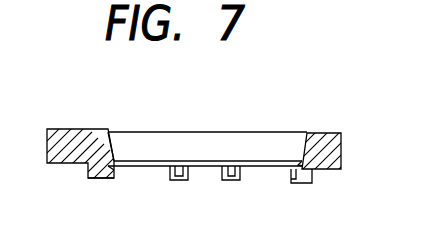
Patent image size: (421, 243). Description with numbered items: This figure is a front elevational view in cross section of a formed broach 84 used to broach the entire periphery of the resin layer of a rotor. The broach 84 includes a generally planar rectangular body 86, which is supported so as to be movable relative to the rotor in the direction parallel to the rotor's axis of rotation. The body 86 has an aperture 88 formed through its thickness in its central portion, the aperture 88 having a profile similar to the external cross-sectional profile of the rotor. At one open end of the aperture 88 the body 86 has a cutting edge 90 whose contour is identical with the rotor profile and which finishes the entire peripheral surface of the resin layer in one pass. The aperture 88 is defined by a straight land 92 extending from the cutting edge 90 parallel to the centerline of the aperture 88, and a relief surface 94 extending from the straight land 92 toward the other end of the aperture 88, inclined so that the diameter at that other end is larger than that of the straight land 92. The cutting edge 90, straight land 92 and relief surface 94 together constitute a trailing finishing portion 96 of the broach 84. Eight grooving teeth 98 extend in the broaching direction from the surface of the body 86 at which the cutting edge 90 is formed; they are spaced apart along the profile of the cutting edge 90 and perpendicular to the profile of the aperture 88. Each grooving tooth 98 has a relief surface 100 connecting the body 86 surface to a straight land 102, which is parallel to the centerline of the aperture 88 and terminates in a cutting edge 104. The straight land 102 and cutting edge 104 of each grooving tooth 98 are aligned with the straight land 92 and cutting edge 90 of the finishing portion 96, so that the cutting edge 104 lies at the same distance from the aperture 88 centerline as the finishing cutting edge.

The formed broach 84 is at (194, 123).
The body 86 is at (62, 134).
The aperture 88 is at (234, 138).
The cutting edge 90 is at (303, 170).
The straight land 92 is at (298, 165).
The relief surface 94 is at (303, 140).
The trailing finishing portion 96 is at (112, 138).
The grooving teeth 98 is at (88, 172).
The relief surface 100 is at (143, 160).
The straight land 102 is at (116, 170).
The cutting edge 104 is at (112, 180).